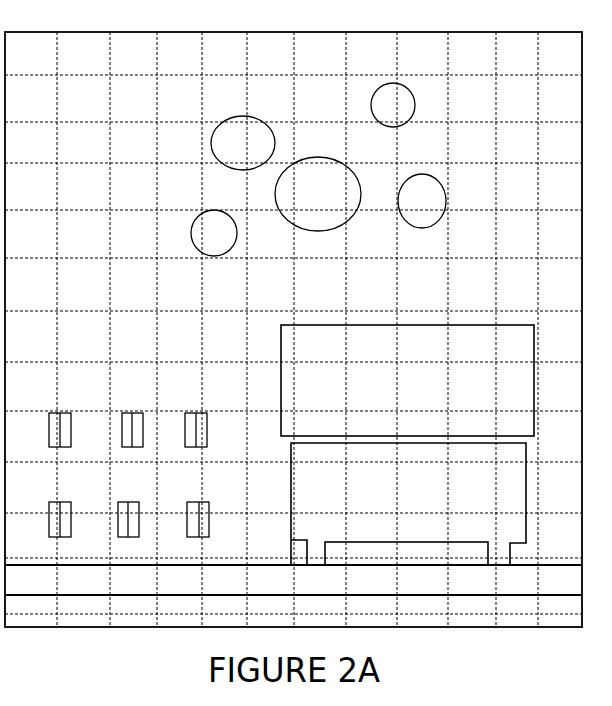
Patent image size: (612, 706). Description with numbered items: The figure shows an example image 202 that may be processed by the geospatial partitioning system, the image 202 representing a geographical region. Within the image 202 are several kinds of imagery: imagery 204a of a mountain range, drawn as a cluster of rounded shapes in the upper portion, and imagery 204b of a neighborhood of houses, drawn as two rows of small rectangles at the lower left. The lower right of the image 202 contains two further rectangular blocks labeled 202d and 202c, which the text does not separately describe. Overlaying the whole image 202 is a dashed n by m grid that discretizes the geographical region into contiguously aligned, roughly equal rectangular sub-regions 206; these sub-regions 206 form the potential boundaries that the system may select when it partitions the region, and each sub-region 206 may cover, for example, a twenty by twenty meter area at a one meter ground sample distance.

The image 202 is at (430, 32).
The sub-regions 206 is at (51, 61).
The imagery of the mountain range 204a is at (371, 104).
The imagery of the neighborhood of houses 204b is at (139, 413).
The rectangular panel 202d is at (378, 324).
The base panel 202c is at (291, 490).